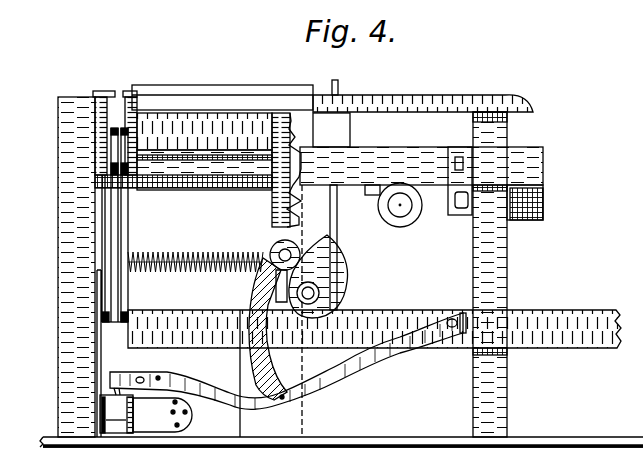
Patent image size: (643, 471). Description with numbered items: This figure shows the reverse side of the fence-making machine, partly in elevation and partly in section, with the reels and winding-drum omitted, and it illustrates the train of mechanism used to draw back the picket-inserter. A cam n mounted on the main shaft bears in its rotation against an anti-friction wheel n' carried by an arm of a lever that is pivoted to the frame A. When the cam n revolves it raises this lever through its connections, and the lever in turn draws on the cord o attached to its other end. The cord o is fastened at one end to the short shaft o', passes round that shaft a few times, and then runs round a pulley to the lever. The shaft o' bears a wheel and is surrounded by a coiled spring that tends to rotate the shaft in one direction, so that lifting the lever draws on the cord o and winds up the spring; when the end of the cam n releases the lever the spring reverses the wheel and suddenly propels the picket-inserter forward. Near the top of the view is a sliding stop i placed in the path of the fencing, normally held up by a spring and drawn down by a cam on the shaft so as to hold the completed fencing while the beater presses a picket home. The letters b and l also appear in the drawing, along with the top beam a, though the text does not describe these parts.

The top beam a is at (399, 97).
The sliding stop i is at (340, 89).
The frame A is at (497, 234).
The short shaft o' is at (109, 267).
The cord o is at (140, 369).
The cam n is at (318, 276).
The anti-friction wheel n' is at (279, 265).
The hole b is at (452, 324).
The hub l is at (325, 294).